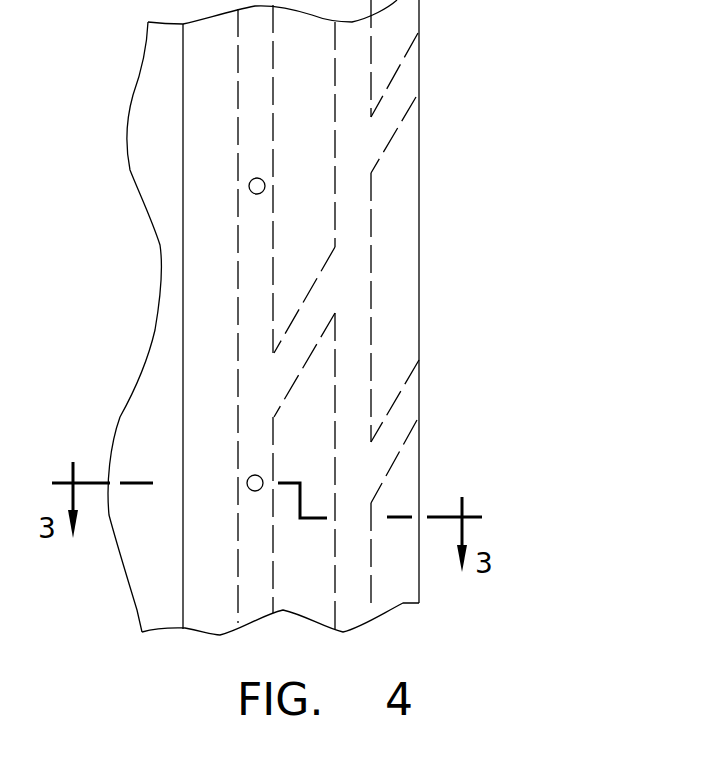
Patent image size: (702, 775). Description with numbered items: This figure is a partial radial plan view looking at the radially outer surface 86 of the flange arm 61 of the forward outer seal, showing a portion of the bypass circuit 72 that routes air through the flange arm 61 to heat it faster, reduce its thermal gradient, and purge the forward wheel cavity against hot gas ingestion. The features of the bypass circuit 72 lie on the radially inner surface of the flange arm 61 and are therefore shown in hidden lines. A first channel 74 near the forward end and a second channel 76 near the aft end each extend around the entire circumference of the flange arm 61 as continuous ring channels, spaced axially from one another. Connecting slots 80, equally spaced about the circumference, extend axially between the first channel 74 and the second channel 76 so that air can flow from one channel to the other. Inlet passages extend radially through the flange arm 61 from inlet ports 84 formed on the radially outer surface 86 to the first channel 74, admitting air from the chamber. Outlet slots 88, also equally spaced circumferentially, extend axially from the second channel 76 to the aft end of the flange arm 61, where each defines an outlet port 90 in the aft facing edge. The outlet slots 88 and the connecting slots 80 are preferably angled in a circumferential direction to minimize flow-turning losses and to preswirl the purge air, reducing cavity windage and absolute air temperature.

The flange arm 61 is at (395, 302).
The bypass circuit 72 is at (412, 340).
The first channel 74 is at (255, 278).
The second channel 76 is at (353, 243).
The connecting slots 80 is at (305, 338).
The inlet port 84 is at (249, 186).
The radially outer surface 86 is at (330, 107).
The outlet slots 88 is at (395, 106).
The outlet port 90 is at (419, 62).